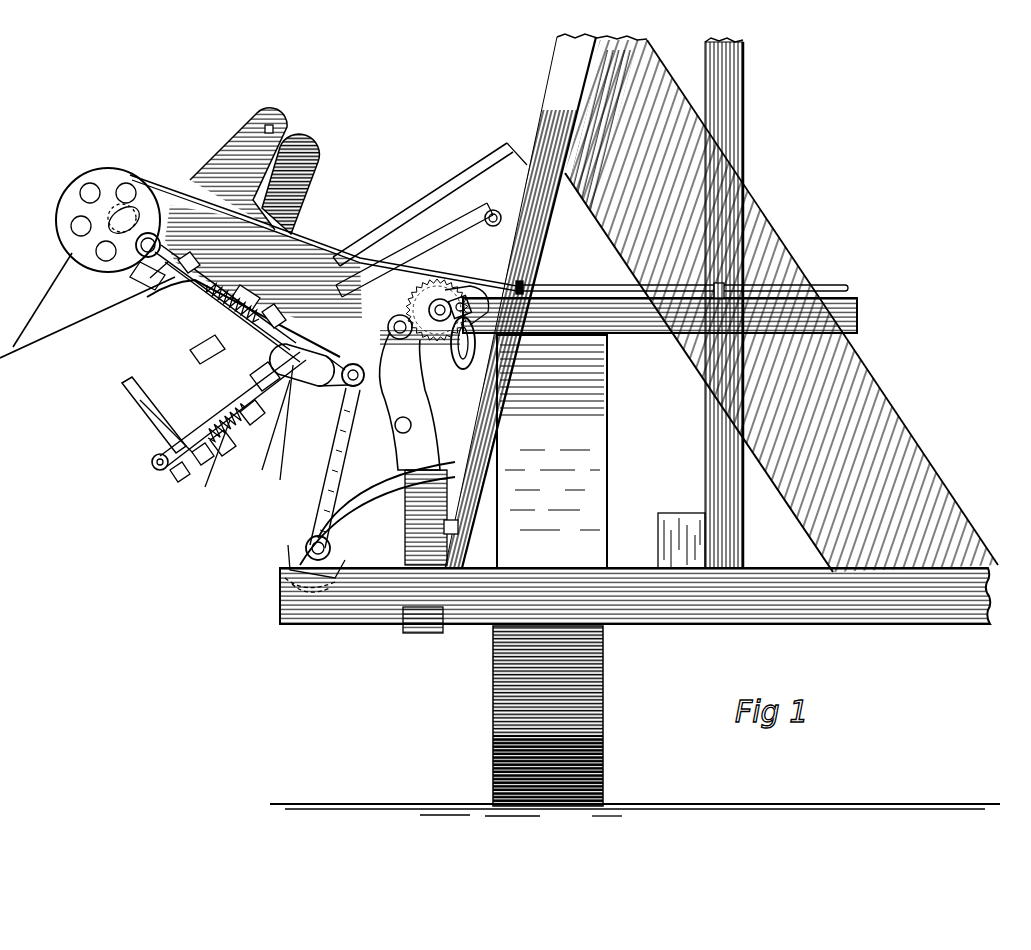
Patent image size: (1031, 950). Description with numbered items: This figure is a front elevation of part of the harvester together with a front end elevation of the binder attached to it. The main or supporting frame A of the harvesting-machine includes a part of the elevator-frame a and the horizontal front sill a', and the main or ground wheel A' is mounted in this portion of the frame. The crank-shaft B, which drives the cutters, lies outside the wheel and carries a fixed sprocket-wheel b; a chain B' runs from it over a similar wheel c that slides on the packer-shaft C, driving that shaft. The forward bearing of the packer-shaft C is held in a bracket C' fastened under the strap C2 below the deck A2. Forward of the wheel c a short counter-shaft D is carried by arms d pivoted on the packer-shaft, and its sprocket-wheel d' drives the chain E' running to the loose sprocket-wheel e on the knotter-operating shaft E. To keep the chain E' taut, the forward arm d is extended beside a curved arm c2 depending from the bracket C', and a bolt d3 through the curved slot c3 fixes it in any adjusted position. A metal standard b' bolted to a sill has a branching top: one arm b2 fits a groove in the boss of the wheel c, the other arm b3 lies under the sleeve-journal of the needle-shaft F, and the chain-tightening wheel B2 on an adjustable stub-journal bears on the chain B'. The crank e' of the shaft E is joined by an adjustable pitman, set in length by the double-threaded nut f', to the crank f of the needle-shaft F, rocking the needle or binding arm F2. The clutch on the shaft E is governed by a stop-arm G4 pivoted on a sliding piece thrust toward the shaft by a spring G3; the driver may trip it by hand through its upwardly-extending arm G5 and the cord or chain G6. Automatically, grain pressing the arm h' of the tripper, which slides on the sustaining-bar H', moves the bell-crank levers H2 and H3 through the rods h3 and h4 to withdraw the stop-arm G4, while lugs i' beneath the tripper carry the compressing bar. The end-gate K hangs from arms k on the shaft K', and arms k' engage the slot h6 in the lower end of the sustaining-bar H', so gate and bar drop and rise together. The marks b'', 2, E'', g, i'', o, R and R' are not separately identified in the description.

The main or supporting frame A is at (451, 706).
The elevator-frame a is at (769, 303).
The horizontal front sill a' is at (635, 596).
The main or ground wheel A' is at (552, 451).
The deck A2 is at (498, 148).
The crank-shaft B is at (262, 563).
The sprocket-wheel b is at (283, 484).
The chain B' is at (377, 513).
The metal standard b' is at (462, 511).
The chain-tightening wheel B2 is at (410, 422).
The arm of the standard b2 is at (419, 349).
The arm of the standard b3 is at (348, 393).
The lever arm b'' is at (452, 434).
The packer-shaft C is at (432, 248).
The bracket C' is at (369, 273).
The strap C2 is at (479, 230).
The sprocket-wheel c is at (442, 343).
The curved arm c2 is at (473, 355).
The curved slot c3 is at (466, 337).
The counter-shaft D is at (464, 296).
The arms d is at (512, 198).
The sprocket-wheel d' is at (443, 240).
The bolt d3 is at (448, 304).
The rod block 2 is at (527, 283).
The knotter-operating shaft E is at (108, 191).
The sprocket-wheel e is at (100, 222).
The crank e' is at (124, 222).
The chain E' is at (323, 223).
The hatched lever E'' is at (263, 261).
The needle-shaft F is at (292, 365).
The crank f is at (317, 389).
The nut f' is at (242, 284).
The needle or binding arm F2 is at (405, 250).
The crank pin g is at (138, 250).
The spring G3 is at (227, 320).
The stop-arm G4 is at (150, 278).
The upwardly-extending arm G5 is at (190, 232).
The cord or chain G6 is at (245, 240).
The sustaining-bar H' is at (199, 429).
The bell-crank lever H2 is at (250, 372).
The bell-crank lever H3 is at (262, 415).
The arm h' is at (217, 312).
The rod h3 is at (247, 465).
The rod h4 is at (195, 357).
The slot h6 is at (172, 482).
The lugs i' is at (263, 457).
The link i'' is at (206, 477).
The end-gate K is at (137, 415).
The arms k is at (156, 427).
The shaft K' is at (218, 467).
The arms k' is at (192, 474).
The bracket o is at (145, 275).
The rope R is at (87, 310).
The rod R' is at (208, 337).